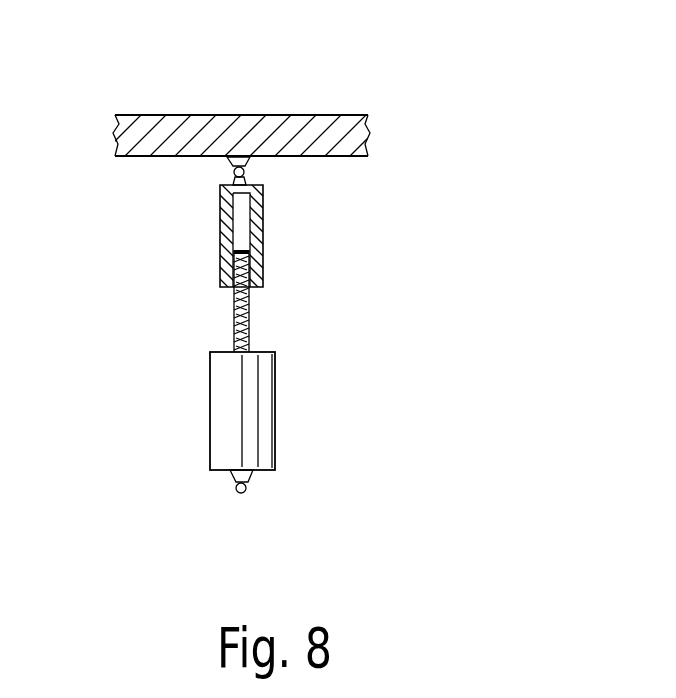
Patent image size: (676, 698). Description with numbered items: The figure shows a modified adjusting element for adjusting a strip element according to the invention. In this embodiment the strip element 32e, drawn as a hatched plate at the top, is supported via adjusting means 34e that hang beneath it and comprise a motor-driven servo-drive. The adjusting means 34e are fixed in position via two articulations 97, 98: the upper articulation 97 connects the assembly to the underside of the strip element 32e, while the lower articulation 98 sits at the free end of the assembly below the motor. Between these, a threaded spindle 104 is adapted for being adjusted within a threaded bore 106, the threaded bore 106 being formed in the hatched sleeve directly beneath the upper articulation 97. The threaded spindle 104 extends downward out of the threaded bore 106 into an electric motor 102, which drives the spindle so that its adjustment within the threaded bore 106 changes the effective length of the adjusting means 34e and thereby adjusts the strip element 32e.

The strip element 32e is at (207, 135).
The articulation 97 is at (245, 171).
The threaded bore 106 is at (263, 258).
The threaded spindle 104 is at (250, 330).
The electric motor 102 is at (262, 432).
The articulation 98 is at (250, 484).
The adjusting means 34e is at (175, 400).